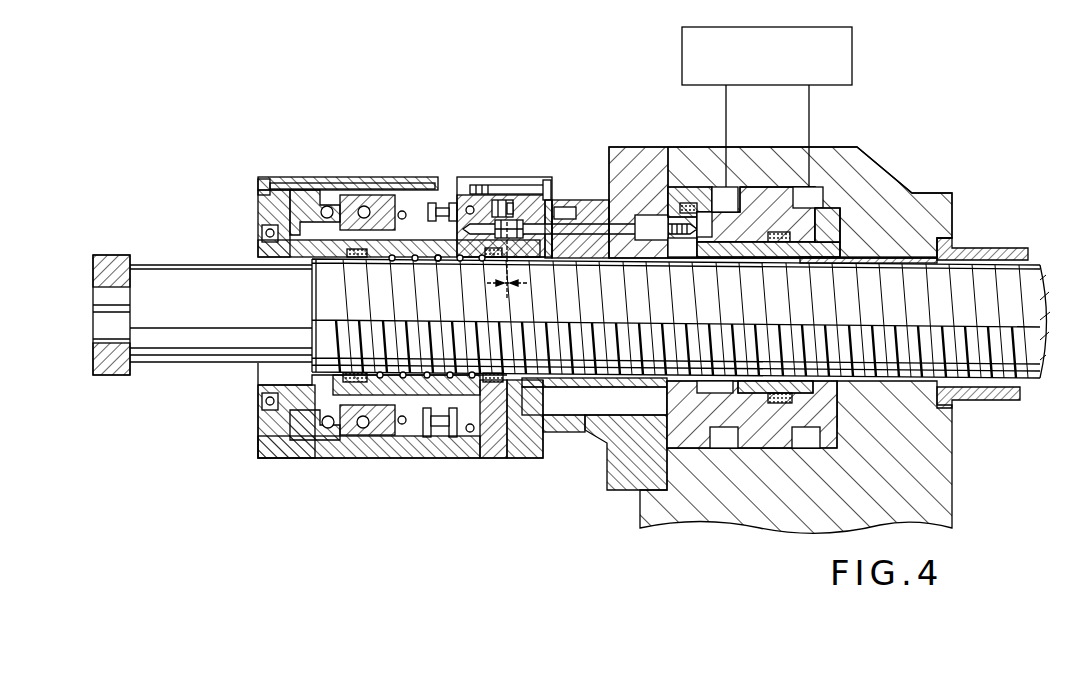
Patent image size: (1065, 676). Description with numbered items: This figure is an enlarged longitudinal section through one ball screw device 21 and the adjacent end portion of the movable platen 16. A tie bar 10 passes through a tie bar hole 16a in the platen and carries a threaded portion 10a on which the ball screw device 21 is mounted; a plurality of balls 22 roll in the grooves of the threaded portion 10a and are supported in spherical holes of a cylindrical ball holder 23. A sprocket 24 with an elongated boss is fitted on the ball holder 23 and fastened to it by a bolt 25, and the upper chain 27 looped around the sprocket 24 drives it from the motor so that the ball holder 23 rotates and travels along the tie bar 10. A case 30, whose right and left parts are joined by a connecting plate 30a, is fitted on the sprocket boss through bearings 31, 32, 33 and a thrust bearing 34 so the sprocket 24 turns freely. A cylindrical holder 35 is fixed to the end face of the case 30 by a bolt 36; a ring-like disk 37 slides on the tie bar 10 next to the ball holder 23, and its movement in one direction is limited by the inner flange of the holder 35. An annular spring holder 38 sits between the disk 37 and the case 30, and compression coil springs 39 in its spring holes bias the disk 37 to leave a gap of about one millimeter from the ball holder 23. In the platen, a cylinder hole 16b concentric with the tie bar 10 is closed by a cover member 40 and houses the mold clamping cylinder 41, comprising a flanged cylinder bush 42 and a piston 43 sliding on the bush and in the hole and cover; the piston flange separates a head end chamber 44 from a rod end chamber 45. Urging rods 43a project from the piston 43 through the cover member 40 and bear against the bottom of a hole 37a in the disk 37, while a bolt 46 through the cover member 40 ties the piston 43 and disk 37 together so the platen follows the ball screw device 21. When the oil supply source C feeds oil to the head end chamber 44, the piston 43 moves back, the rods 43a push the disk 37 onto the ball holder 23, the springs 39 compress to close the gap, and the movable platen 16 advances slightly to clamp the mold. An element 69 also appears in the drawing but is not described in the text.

The tie bar 10 is at (988, 258).
The threaded portion 10a is at (586, 252).
The movable platen 16 is at (887, 168).
The tie bar hole 16a is at (897, 262).
The cylinder hole 16b is at (730, 190).
The ball screw device 21 is at (488, 167).
The balls 22 is at (391, 261).
The ball holder 23 is at (437, 261).
The sprocket 24 is at (440, 203).
The bolt 25 is at (482, 258).
The upper chain 27 is at (452, 203).
The case 30 is at (350, 183).
The connecting plate 30a is at (470, 197).
The bearing 31 is at (484, 224).
The bearing 32 is at (385, 208).
The bearing 33 is at (272, 233).
The thrust bearing 34 is at (318, 197).
The cylindrical holder 35 is at (538, 180).
The bolt 36 is at (520, 186).
The ring-like disk 37 is at (549, 230).
The hole 37a is at (535, 405).
The annular spring holder 38 is at (500, 200).
The compression coil spring 39 is at (509, 200).
The cover member 40 is at (632, 190).
The mold clamping cylinder 41 is at (798, 184).
The cylinder bush 42 is at (842, 225).
The piston 43 is at (778, 190).
The urging rod 43a is at (590, 418).
The head end chamber 44 is at (815, 190).
The rod end chamber 45 is at (715, 200).
The bolt 46 is at (666, 203).
The hub 69 is at (112, 268).
The oil supply source C is at (852, 50).